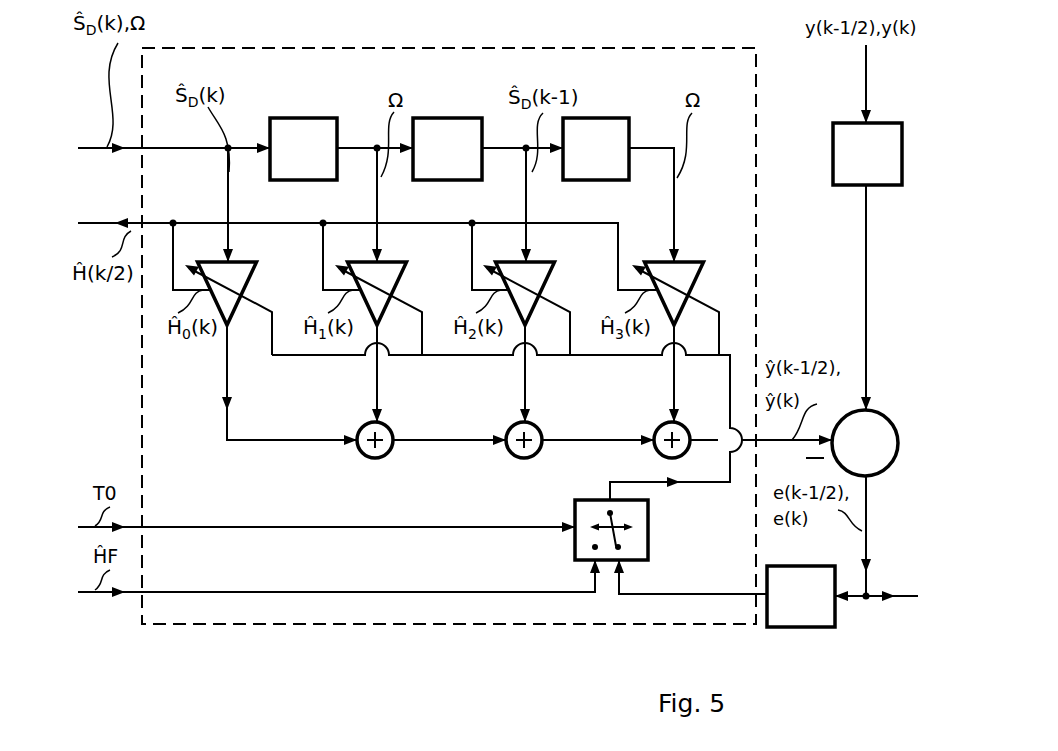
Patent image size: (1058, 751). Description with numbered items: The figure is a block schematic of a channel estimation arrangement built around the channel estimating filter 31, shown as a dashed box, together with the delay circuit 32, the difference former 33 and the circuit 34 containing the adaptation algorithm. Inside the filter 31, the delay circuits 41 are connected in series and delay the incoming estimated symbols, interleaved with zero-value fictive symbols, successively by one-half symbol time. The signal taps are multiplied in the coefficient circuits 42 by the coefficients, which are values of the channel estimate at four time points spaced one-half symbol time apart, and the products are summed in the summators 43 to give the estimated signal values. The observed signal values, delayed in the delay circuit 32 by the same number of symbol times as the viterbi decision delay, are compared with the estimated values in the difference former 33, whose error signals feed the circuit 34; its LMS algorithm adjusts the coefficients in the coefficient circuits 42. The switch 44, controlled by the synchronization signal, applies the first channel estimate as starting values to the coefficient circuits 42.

The channel estimating filter 31 is at (407, 626).
The delay circuit 32 is at (885, 177).
The difference former 33 is at (893, 466).
The circuit with the adaptation algorithm 34 is at (800, 615).
The delay circuits 41 is at (302, 118).
The coefficient circuits 42 is at (256, 263).
The summators 43 is at (375, 458).
The switch 44 is at (578, 502).